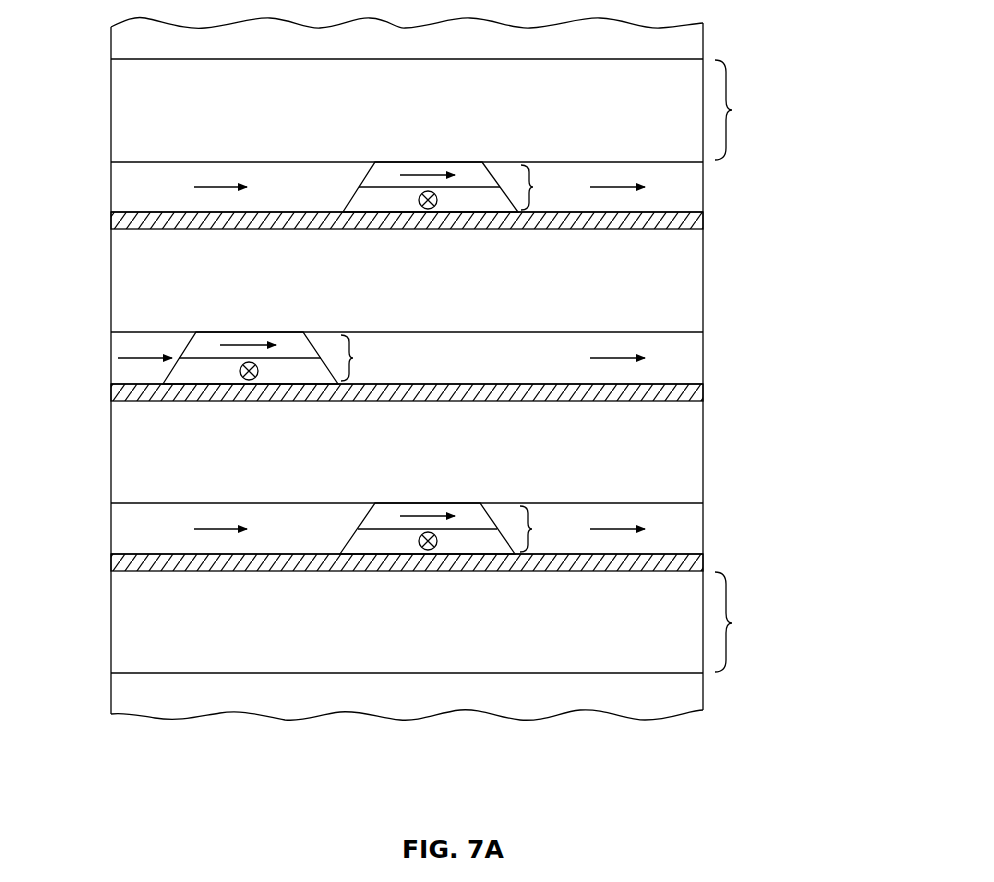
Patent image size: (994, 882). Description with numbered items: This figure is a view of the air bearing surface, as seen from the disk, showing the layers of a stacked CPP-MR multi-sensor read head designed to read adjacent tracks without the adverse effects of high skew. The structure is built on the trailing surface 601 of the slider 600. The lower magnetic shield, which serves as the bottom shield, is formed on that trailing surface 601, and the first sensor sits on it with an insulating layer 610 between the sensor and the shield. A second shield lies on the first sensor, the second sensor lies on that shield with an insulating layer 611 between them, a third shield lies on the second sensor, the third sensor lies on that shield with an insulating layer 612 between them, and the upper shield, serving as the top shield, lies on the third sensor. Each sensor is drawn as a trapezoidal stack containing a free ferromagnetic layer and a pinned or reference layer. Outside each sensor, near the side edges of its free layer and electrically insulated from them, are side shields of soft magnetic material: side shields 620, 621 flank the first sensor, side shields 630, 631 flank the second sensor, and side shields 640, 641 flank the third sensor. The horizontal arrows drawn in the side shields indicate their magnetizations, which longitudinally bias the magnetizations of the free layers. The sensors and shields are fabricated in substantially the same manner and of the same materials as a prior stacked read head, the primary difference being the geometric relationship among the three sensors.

The slider 600 is at (120, 697).
The trailing surface 601 is at (176, 674).
The insulating layer 610 is at (697, 563).
The insulating layer 611 is at (697, 393).
The insulating layer 612 is at (697, 222).
The side shield 620 is at (120, 529).
The side shield 621 is at (695, 528).
The side shield 630 is at (120, 348).
The side shield 631 is at (695, 357).
The side shield 640 is at (120, 186).
The side shield 641 is at (695, 186).